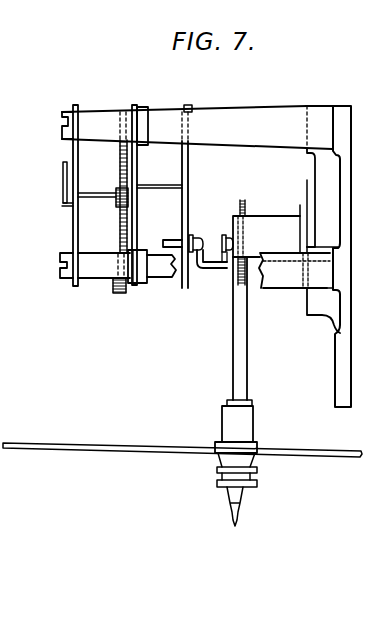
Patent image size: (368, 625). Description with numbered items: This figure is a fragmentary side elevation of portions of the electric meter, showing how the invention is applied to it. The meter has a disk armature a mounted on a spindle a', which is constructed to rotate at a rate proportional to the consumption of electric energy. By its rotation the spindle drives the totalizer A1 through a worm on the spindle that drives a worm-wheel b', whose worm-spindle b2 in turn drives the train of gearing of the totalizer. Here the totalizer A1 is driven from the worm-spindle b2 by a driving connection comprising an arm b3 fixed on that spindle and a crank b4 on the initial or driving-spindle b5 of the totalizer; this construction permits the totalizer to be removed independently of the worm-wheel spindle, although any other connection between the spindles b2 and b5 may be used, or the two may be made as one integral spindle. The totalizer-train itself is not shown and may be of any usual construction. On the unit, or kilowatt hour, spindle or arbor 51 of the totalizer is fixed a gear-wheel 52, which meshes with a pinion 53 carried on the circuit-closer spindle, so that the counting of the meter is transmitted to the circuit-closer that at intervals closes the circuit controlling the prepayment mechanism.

The totalizer A1 is at (75, 203).
The gear-wheel 52 is at (108, 195).
The unit spindle 51 is at (100, 190).
The pinion 53 is at (116, 293).
The driving-spindle b5 is at (178, 240).
The crank b4 is at (228, 262).
The worm-spindle b2 is at (226, 236).
The arm b3 is at (245, 252).
The worm-wheel b' is at (253, 289).
The spindle a' is at (243, 391).
The disk armature a is at (182, 441).